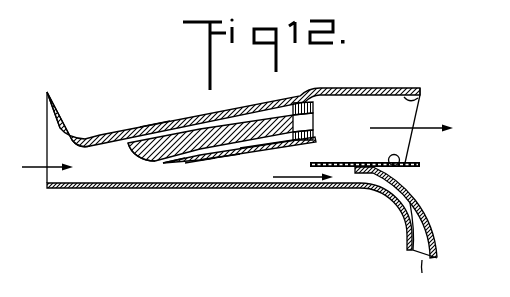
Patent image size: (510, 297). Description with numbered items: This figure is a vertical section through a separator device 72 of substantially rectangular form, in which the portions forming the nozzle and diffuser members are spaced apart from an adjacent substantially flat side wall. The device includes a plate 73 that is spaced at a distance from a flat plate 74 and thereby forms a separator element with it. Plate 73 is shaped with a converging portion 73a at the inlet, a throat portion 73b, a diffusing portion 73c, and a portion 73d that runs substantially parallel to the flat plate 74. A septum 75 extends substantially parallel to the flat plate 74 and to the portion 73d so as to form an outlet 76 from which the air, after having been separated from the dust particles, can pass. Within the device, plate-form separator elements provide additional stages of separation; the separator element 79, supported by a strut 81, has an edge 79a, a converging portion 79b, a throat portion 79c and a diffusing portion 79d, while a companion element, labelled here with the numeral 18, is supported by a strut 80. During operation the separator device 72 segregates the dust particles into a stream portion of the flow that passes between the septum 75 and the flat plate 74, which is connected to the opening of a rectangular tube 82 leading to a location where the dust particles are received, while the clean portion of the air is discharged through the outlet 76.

The nozzle tip 18 is at (165, 164).
The separator device 72 is at (168, 88).
The plate 73 is at (97, 132).
The converging portion 73a is at (50, 130).
The throat portion 73b is at (71, 144).
The diffusing portion 73c is at (128, 143).
The portion substantially parallel to flat plate 73d is at (416, 100).
The flat plate 74 is at (280, 189).
The septum 75 is at (419, 167).
The outlet 76 is at (417, 117).
The separator element 79 is at (248, 156).
The edge 79a is at (185, 165).
The converging portion 79b is at (202, 163).
The throat portion 79c is at (210, 161).
The diffusing portion 79d is at (254, 151).
The strut 80 is at (318, 104).
The strut 81 is at (320, 131).
The rectangular tube 82 is at (440, 249).